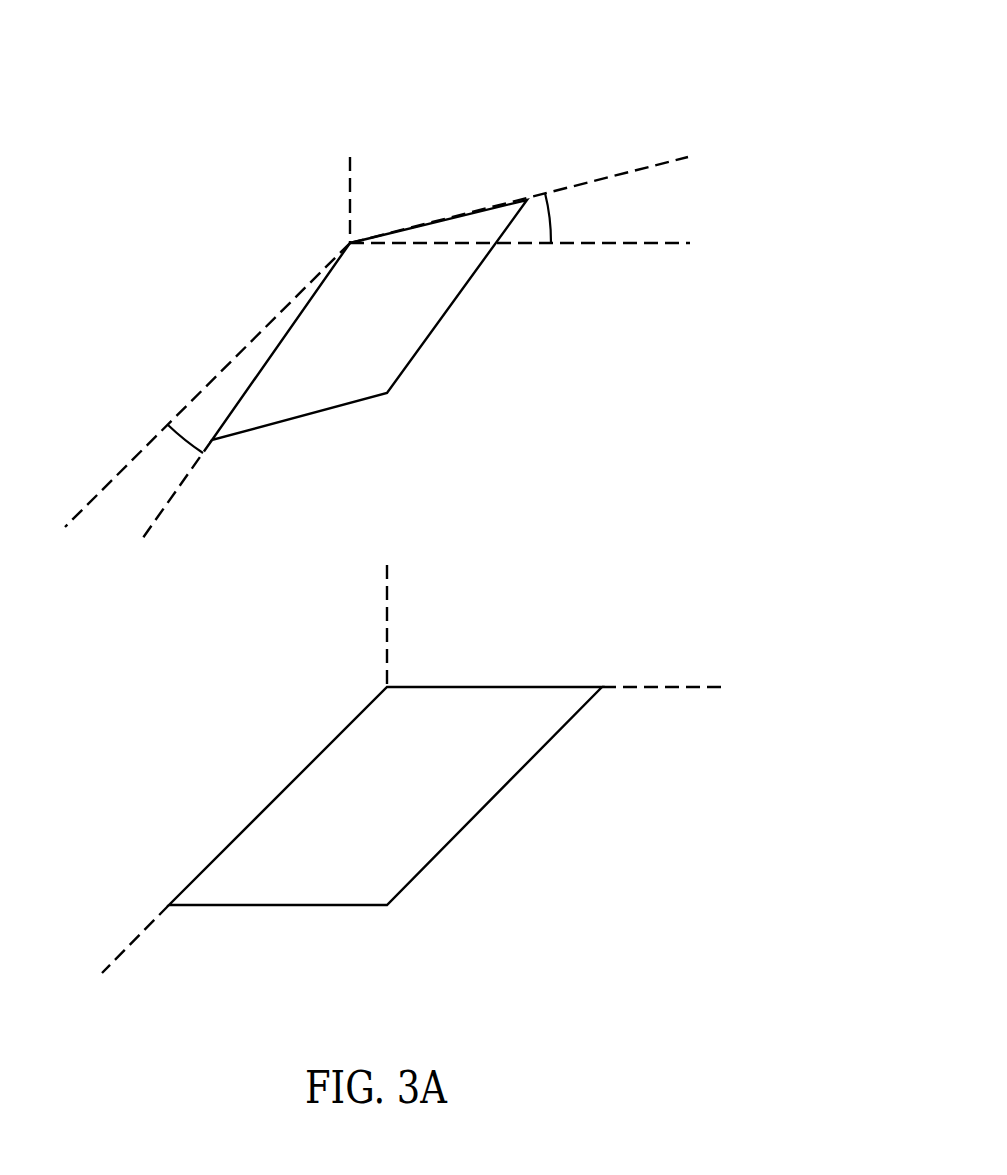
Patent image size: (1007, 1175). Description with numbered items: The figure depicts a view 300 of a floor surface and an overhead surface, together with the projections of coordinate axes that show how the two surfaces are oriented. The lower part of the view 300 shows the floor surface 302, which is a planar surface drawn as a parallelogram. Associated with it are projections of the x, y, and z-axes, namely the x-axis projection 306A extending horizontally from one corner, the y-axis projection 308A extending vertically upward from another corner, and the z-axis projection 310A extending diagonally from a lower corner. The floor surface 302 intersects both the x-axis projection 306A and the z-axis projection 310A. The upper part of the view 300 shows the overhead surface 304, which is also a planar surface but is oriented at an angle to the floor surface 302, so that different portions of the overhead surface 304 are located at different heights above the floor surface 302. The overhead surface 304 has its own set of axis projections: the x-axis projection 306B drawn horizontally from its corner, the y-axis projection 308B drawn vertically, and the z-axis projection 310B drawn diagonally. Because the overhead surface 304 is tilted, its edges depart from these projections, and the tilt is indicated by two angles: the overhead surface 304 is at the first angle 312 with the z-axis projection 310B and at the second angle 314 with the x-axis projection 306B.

The view 300 is at (730, 37).
The floor surface 302 is at (497, 797).
The overhead surface 304 is at (458, 295).
The x-axis projection 306A is at (663, 686).
The x-axis projection 306B is at (628, 244).
The y-axis projection 308A is at (387, 627).
The y-axis projection 308B is at (350, 185).
The z-axis projection 310A is at (132, 942).
The z-axis projection 310B is at (117, 480).
The first angle 312 is at (177, 448).
The second angle 314 is at (558, 217).